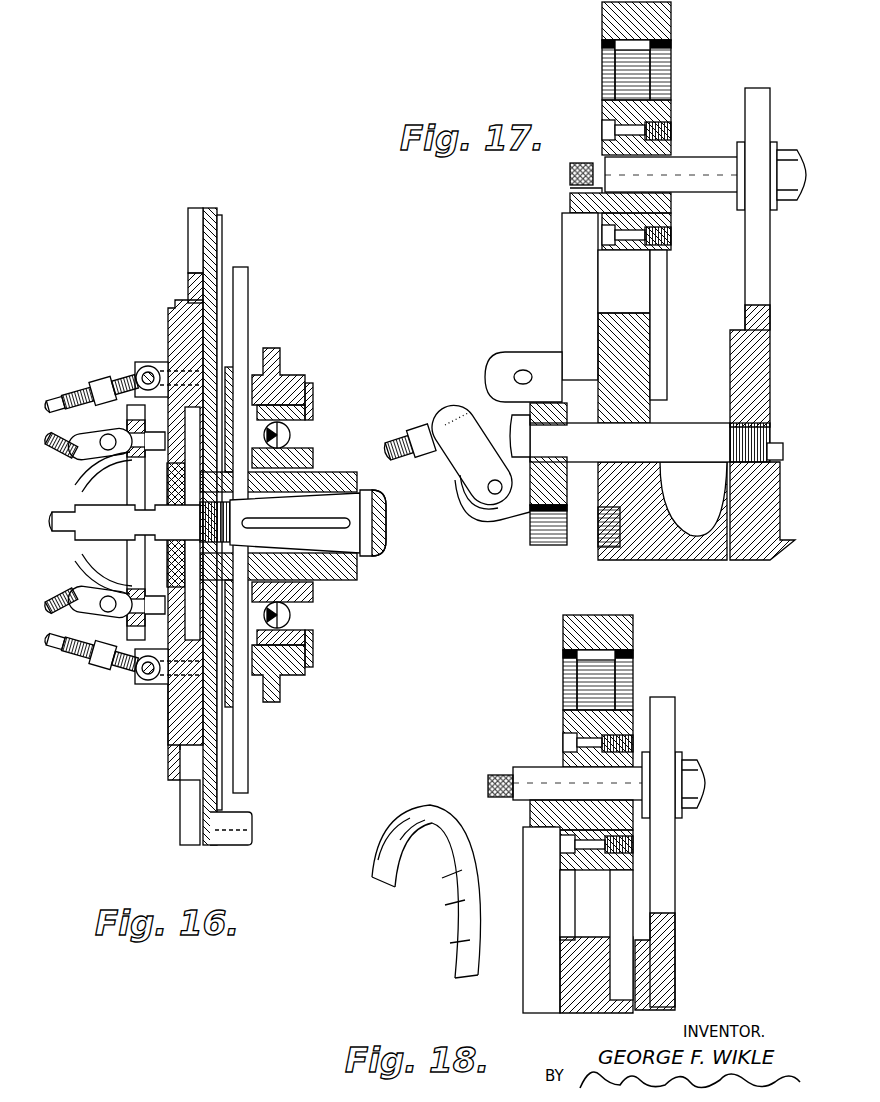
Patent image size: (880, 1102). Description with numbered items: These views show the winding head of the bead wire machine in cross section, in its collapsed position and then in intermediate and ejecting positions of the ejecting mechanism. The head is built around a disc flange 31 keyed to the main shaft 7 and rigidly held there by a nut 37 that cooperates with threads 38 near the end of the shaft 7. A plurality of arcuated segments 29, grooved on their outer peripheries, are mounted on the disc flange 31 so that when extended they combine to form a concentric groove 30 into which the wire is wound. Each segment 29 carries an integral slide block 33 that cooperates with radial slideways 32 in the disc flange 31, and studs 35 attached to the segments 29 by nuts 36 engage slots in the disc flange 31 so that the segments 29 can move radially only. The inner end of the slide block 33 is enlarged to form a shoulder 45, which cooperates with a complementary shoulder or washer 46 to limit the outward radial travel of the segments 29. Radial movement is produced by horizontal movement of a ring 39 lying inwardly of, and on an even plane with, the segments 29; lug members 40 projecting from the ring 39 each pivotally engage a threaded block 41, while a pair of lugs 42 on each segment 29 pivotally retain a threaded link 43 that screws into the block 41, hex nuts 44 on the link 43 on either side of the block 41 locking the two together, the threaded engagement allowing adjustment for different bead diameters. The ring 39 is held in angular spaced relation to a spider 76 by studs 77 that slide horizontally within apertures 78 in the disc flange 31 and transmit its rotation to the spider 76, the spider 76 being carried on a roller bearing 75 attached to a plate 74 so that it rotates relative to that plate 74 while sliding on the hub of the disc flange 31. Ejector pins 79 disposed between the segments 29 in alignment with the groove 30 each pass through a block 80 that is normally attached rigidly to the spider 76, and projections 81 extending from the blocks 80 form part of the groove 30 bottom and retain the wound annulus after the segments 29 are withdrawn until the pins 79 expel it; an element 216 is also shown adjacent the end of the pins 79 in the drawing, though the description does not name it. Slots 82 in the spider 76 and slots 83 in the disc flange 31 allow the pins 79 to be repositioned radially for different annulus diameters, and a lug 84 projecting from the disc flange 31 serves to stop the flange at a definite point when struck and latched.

In FIG. 16, the main shaft 7 is at (385, 548).
In FIG. 17, the main shaft 7 is at (380, 550).
In FIG. 16, the segments 29 is at (168, 310).
In FIG. 17, the segments 29 is at (562, 272).
In FIG. 18, the segments 29 is at (535, 900).
In FIG. 16, the concentric groove 30 is at (170, 750).
In FIG. 17, the concentric groove 30 is at (572, 226).
In FIG. 18, the concentric groove 30 is at (538, 847).
In FIG. 16, the disc flange 31 is at (210, 208).
In FIG. 17, the disc flange 31 is at (602, 28).
In FIG. 18, the disc flange 31 is at (633, 622).
In FIG. 16, the radial slideways 32 is at (190, 240).
In FIG. 16, the slide blocks 33 is at (221, 270).
In FIG. 16, the studs 35 is at (222, 690).
In FIG. 16, the nuts 36 is at (160, 688).
In FIG. 16, the nut 37 is at (300, 522).
In FIG. 16, the threads 38 is at (262, 530).
In FIG. 16, the ring 39 is at (115, 660).
In FIG. 17, the ring 39 is at (545, 545).
In FIG. 16, the lug members 40 is at (82, 640).
In FIG. 17, the lug members 40 is at (500, 518).
In FIG. 16, the threaded block 41 is at (96, 388).
In FIG. 17, the threaded block 41 is at (440, 415).
In FIG. 16, the lugs 42 is at (150, 365).
In FIG. 17, the lugs 42 is at (522, 352).
In FIG. 16, the threaded link 43 is at (124, 388).
In FIG. 17, the threaded link 43 is at (408, 462).
In FIG. 16, the hex nuts 44 is at (62, 412).
In FIG. 17, the hex nuts 44 is at (412, 428).
In FIG. 16, the shoulder 45 is at (140, 488).
In FIG. 16, the washer 46 is at (140, 558).
In FIG. 16, the plate 74 is at (285, 362).
In FIG. 16, the roller bearing 75 is at (313, 400).
In FIG. 16, the spider 76 is at (246, 348).
In FIG. 17, the spider 76 is at (737, 345).
In FIG. 18, the spider 76 is at (672, 928).
In FIG. 17, the studs 77 is at (685, 430).
In FIG. 17, the apertures 78 is at (655, 415).
In FIG. 17, the ejector pins 79 is at (712, 157).
In FIG. 18, the ejector pins 79 is at (540, 756).
In FIG. 17, the block 80 is at (602, 108).
In FIG. 18, the block 80 is at (563, 715).
In FIG. 17, the projections 81 is at (570, 200).
In FIG. 18, the projections 81 is at (530, 812).
In FIG. 17, the slot 82 is at (770, 80).
In FIG. 18, the slot 82 is at (672, 867).
In FIG. 17, the slot 83 is at (650, 70).
In FIG. 18, the slot 83 is at (577, 682).
In FIG. 16, the lug 84 is at (240, 845).
In FIG. 17, the spring 216 is at (570, 174).
In FIG. 18, the spring 216 is at (488, 785).